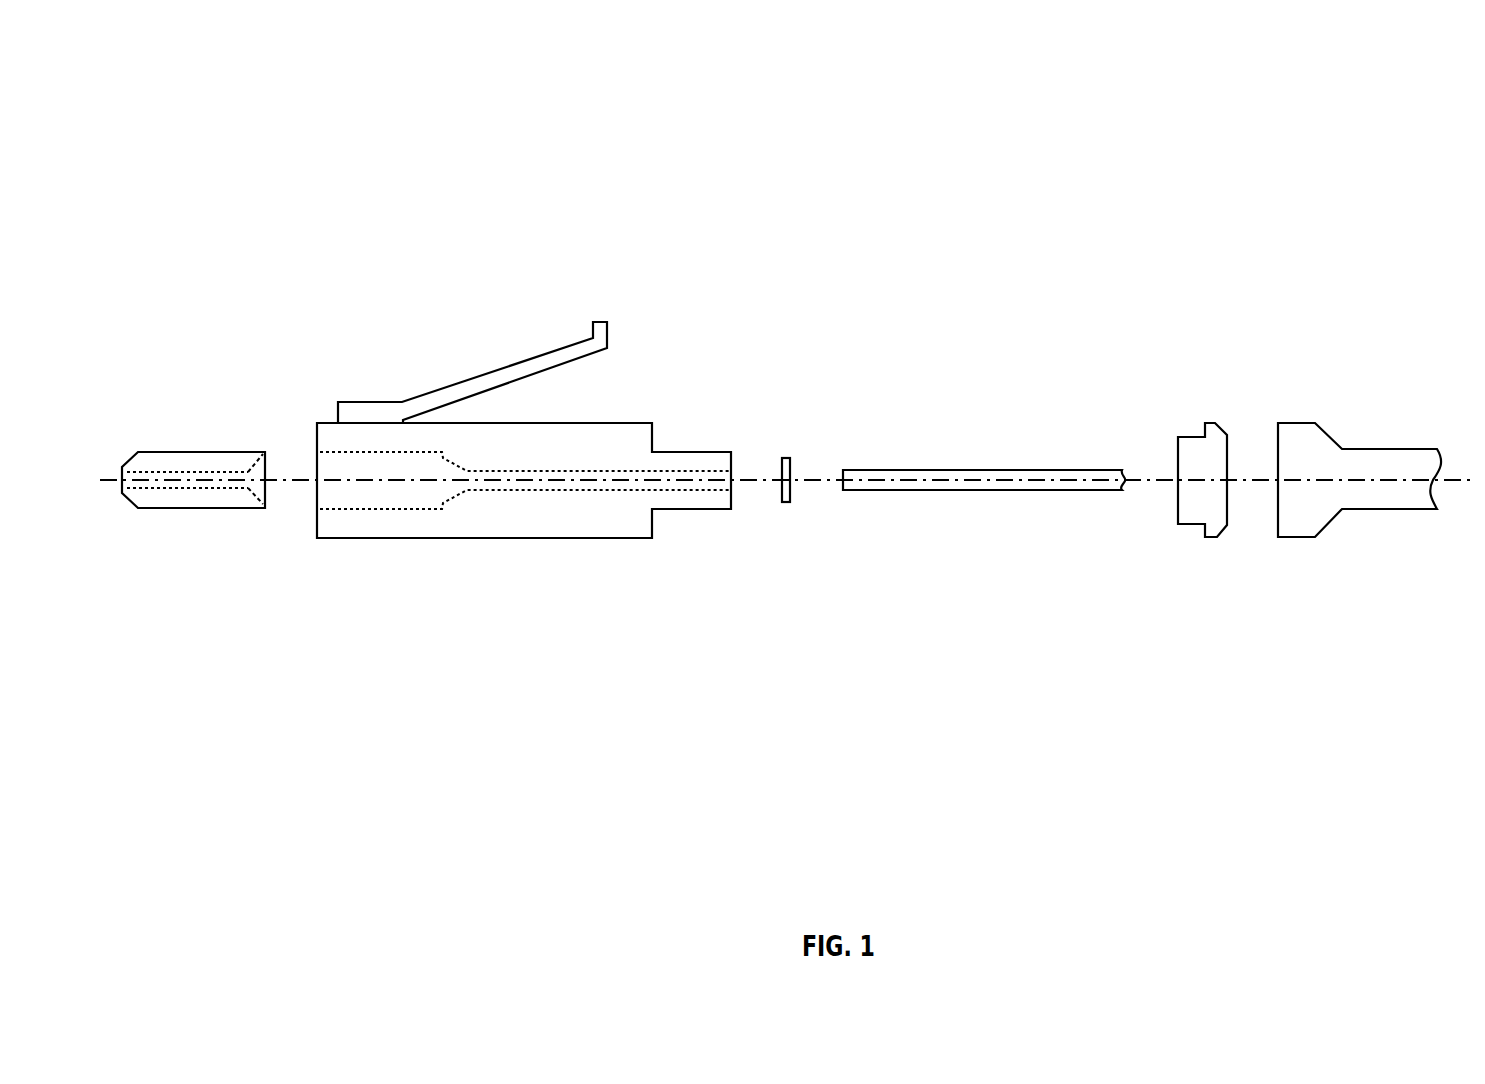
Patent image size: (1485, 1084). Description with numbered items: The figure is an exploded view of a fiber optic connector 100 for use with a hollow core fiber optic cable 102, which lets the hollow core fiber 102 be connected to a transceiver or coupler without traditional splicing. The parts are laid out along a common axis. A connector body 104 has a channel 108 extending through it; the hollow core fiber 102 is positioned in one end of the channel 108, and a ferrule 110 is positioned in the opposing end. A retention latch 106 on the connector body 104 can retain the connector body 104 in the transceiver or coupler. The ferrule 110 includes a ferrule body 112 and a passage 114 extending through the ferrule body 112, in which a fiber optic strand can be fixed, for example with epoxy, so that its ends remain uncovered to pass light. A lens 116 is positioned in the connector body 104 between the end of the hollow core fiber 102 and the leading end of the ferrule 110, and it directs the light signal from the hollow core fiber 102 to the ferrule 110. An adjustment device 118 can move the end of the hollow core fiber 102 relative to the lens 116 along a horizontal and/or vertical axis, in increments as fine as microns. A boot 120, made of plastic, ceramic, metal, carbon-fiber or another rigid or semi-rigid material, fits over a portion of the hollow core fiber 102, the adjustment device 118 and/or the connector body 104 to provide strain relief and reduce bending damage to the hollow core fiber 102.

The fiber optic connector 100 is at (221, 84).
The hollow core fiber optic cable 102 is at (985, 492).
The connector body 104 is at (524, 432).
The retention latch 106 is at (602, 318).
The channel 108 is at (374, 493).
The ferrule 110 is at (193, 487).
The ferrule body 112 is at (150, 462).
The passage 114 is at (233, 477).
The lens 116 is at (786, 503).
The adjustment device 118 is at (1205, 540).
The boot 120 is at (1358, 512).